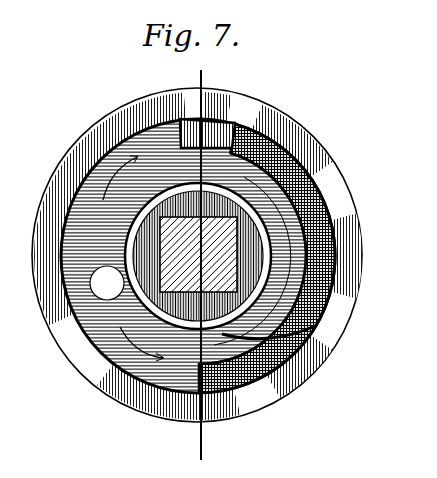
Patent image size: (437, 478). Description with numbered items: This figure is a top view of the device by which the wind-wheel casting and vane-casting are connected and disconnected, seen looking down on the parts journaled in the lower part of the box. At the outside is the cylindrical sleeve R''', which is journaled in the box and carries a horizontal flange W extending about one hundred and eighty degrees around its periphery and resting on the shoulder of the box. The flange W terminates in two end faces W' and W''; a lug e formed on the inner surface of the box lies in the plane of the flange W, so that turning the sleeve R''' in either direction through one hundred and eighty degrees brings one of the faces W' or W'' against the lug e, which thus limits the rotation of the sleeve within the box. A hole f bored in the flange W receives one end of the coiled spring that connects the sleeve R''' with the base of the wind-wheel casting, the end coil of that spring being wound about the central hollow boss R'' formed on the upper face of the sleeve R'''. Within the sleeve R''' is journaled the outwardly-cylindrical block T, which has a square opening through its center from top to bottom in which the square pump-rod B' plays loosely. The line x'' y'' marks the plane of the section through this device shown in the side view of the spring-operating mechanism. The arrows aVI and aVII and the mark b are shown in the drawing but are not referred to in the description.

The section line x'' is at (214, 258).
The lug e is at (195, 120).
The face of the flange W'' is at (198, 245).
The direction arrow aVI is at (100, 172).
The horizontal flange W is at (183, 255).
The hole f is at (97, 290).
The direction arrow aVII is at (143, 353).
The central hollow boss R'' is at (198, 321).
The section line y'' is at (189, 432).
The face of the flange W' is at (198, 294).
The pin b is at (237, 390).
The square pump-rod B' is at (270, 260).
The cylindrical sleeve R''' is at (301, 261).
The inner arc T' is at (286, 258).